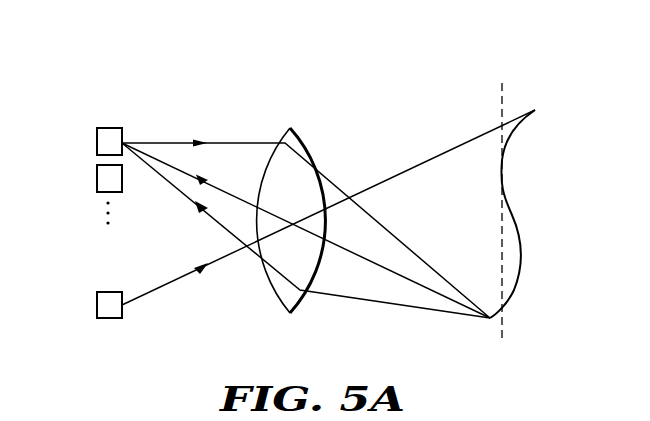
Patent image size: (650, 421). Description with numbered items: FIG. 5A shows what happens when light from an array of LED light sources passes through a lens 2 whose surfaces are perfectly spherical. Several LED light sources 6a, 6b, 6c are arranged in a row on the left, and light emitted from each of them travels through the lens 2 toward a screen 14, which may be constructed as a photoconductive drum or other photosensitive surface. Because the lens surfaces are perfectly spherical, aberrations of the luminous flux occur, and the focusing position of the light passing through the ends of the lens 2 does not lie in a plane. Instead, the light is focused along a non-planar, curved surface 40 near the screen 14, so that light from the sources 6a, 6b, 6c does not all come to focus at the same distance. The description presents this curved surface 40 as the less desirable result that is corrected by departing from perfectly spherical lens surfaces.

The lens 2 is at (293, 118).
The LED light source 6a is at (97, 142).
The LED light source 6b is at (97, 179).
The LED light source 6c is at (97, 304).
The screen 14 is at (502, 324).
The surface 40 is at (513, 143).